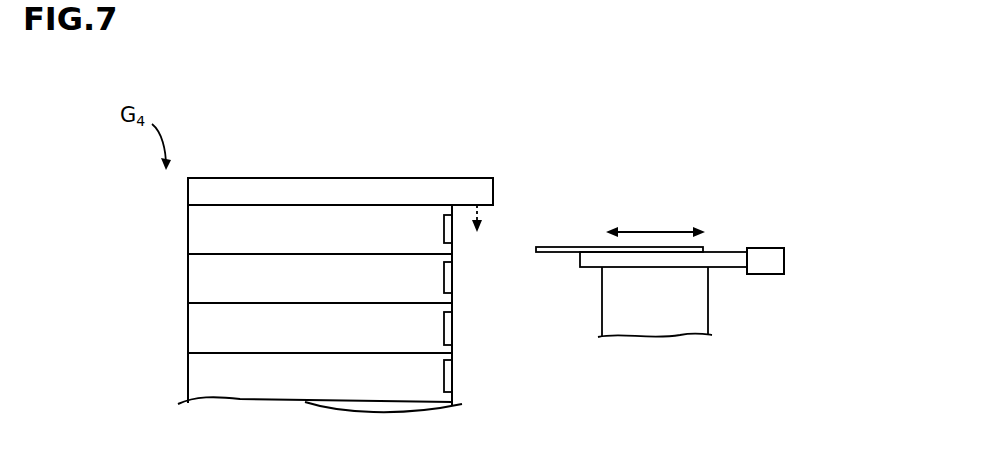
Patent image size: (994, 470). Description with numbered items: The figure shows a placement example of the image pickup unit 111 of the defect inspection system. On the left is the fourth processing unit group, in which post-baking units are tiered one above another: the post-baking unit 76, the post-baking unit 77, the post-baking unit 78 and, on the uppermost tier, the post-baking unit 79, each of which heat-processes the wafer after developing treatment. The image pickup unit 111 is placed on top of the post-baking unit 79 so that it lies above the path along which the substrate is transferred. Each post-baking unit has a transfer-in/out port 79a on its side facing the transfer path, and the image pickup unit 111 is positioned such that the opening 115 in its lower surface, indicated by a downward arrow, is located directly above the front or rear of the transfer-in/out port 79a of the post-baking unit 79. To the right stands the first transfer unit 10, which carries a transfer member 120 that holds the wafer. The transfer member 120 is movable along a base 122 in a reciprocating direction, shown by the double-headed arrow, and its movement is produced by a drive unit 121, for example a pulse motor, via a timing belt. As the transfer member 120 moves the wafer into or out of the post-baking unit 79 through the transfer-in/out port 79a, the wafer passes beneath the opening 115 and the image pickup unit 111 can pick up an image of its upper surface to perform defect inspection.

The image pickup unit 111 is at (282, 184).
The post-baking unit 79 is at (200, 230).
The post-baking unit 78 is at (200, 280).
The post-baking unit 77 is at (200, 328).
The post-baking unit 76 is at (200, 378).
The transfer-in/out port 79a is at (452, 240).
The opening 115 is at (486, 207).
The transfer member 120 is at (700, 251).
The drive unit 121 is at (778, 261).
The base 122 is at (730, 267).
The first transfer unit 10 is at (708, 318).